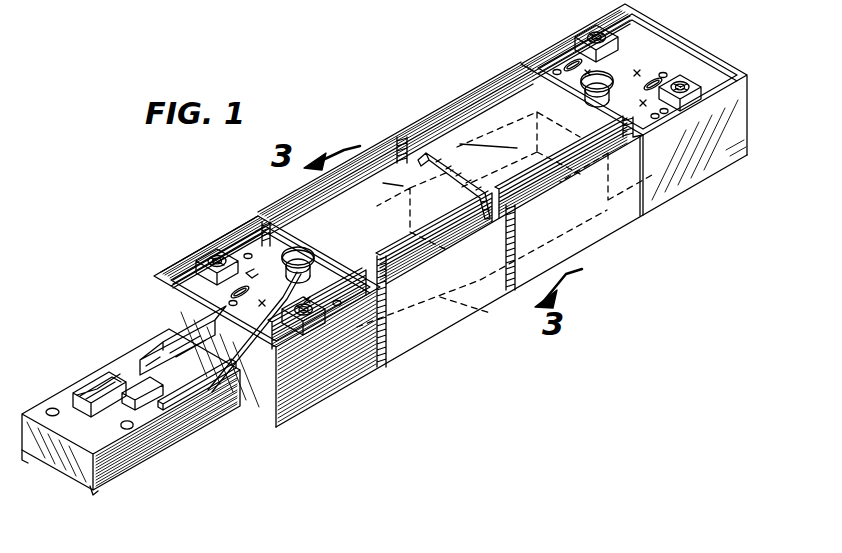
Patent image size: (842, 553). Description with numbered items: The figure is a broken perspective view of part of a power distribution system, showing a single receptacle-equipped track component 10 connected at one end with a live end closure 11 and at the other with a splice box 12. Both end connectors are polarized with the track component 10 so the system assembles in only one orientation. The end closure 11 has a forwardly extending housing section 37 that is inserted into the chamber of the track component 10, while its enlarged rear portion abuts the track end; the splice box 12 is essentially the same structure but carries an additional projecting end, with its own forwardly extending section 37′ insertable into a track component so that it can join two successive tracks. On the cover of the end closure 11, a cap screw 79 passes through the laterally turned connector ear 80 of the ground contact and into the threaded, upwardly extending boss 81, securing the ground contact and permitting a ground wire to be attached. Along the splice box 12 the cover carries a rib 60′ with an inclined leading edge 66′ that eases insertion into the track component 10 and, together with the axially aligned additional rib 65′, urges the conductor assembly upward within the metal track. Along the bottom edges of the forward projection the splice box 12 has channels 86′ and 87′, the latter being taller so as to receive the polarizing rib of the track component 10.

The track component 10 is at (594, 241).
The live end closure 11 is at (728, 165).
The splice box 12 is at (309, 398).
The forwardly extending housing section 37 is at (607, 212).
The forwardly extending housing section of splice box 37′ is at (183, 434).
The cap screw 79 is at (612, 65).
The connector ear 80 is at (308, 270).
The boss 81 is at (270, 276).
The rib 60′ is at (97, 377).
The additional rib 65′ is at (163, 344).
The inclined leading edge 66′ is at (82, 392).
The channel 86′ is at (93, 496).
The channel 87′ is at (22, 460).